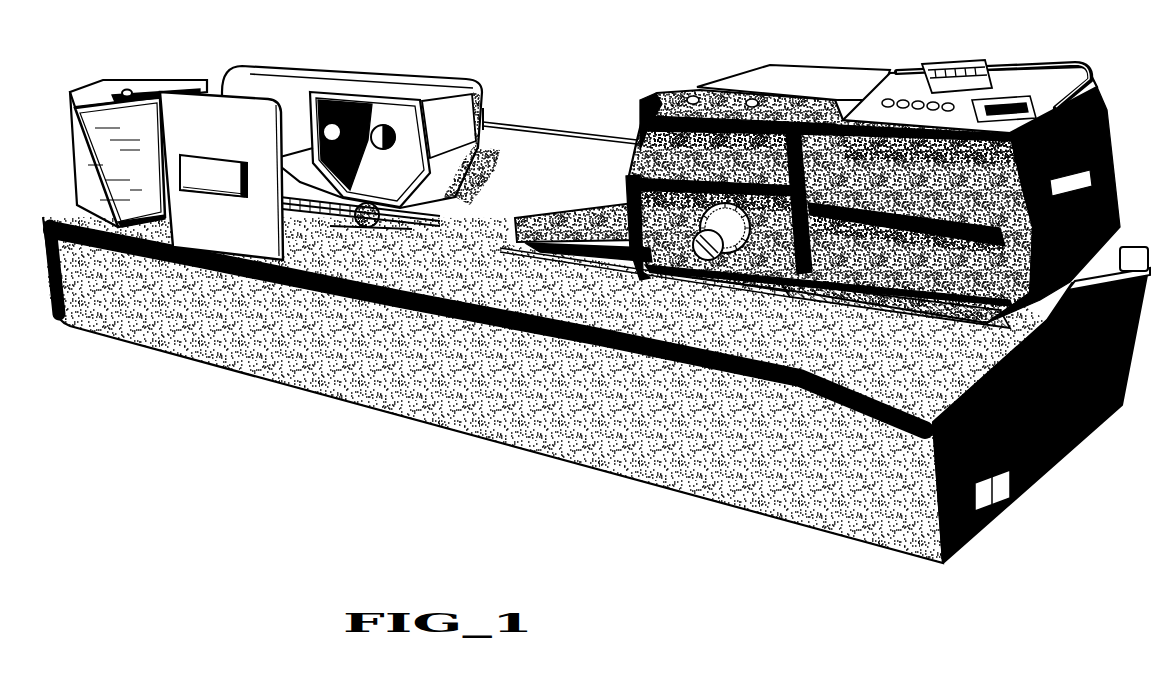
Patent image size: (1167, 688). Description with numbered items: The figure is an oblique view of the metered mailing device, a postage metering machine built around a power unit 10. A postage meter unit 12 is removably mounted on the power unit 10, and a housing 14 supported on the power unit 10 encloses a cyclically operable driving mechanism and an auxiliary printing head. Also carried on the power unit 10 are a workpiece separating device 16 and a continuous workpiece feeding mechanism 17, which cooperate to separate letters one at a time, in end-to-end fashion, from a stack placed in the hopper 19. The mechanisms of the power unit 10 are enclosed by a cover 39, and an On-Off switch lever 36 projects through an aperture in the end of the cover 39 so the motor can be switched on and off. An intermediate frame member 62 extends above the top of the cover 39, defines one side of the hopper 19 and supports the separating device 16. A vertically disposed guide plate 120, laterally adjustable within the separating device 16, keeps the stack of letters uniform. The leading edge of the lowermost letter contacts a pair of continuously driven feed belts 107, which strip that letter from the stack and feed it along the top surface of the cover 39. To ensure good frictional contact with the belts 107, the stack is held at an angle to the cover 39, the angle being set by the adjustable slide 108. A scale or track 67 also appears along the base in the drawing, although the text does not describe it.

The power unit 10 is at (1144, 338).
The postage meter unit 12 is at (1110, 106).
The housing 14 is at (668, 102).
The workpiece separating device 16 is at (486, 107).
The continuous workpiece feeding mechanism 17 is at (314, 190).
The hopper 19 is at (286, 88).
The On-Off switch lever 36 is at (1018, 506).
The cover 39 is at (766, 503).
The intermediate frame member 62 is at (550, 136).
The scale track 67 is at (929, 303).
The feed belts 107 is at (339, 212).
The adjustable slide 108 is at (148, 82).
The guide plate 120 is at (260, 232).